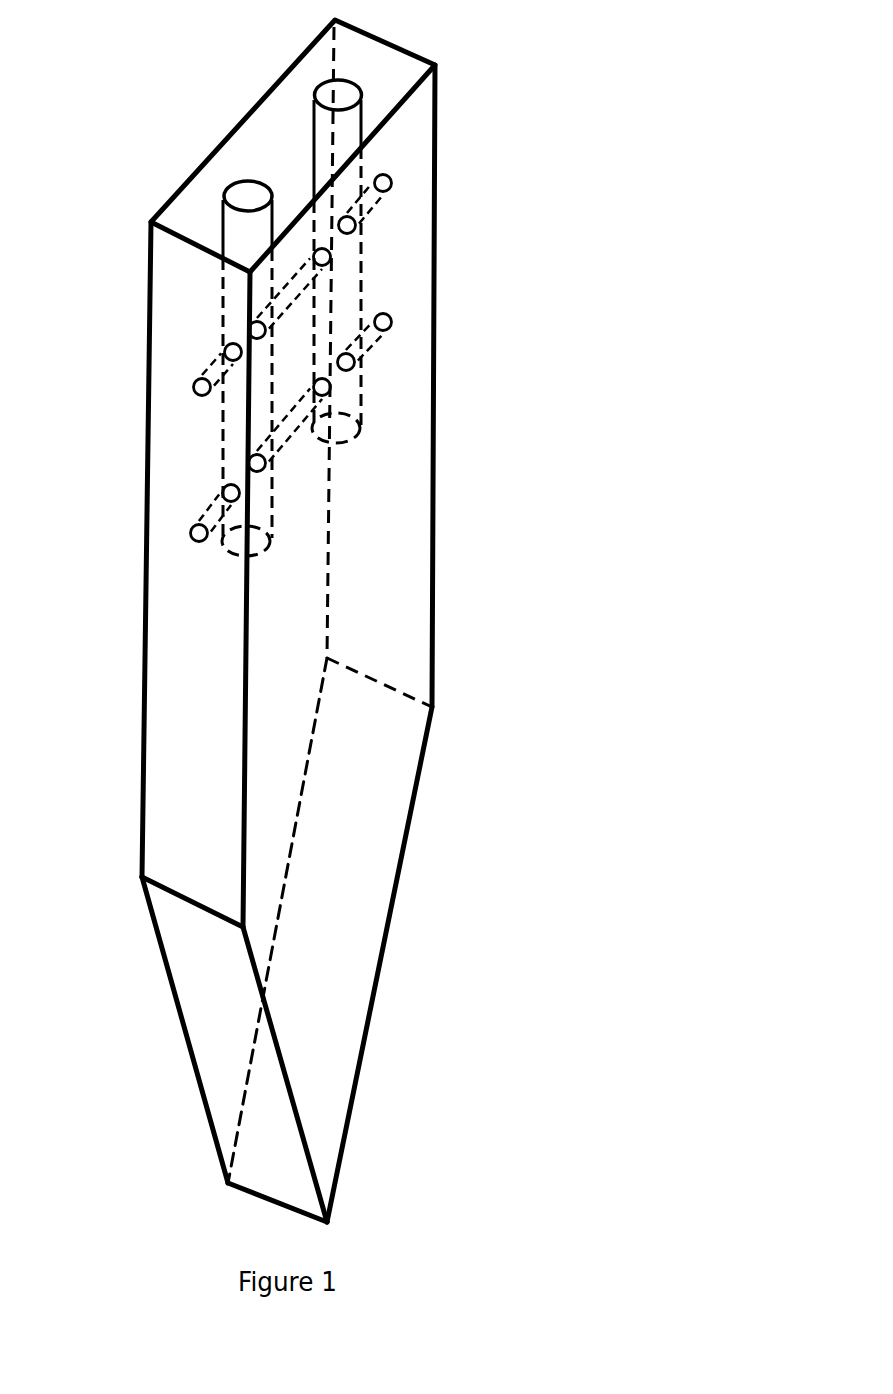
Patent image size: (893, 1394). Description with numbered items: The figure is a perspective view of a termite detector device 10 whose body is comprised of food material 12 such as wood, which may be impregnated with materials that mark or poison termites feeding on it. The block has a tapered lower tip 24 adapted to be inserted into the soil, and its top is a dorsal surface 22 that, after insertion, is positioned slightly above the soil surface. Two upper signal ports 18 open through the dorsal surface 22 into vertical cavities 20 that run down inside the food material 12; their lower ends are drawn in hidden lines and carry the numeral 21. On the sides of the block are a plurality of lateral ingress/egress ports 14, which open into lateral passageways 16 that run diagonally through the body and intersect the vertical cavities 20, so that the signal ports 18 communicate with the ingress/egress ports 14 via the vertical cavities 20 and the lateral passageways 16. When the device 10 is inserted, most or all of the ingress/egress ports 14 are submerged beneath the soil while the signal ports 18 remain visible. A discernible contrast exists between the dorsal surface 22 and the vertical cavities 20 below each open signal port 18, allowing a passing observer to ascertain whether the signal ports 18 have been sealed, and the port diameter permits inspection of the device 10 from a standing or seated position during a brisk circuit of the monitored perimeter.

The device 10 is at (359, 619).
The food material 12 is at (295, 621).
The lateral ingress/egress ports 14 is at (178, 423).
The lateral passageways 16 is at (435, 285).
The upper signal ports 18 is at (330, 40).
The vertical cavities 20 is at (362, 288).
The bore bottoms 21 is at (388, 506).
The dorsal surface 22 is at (235, 146).
The tapered lower tip 24 is at (347, 940).